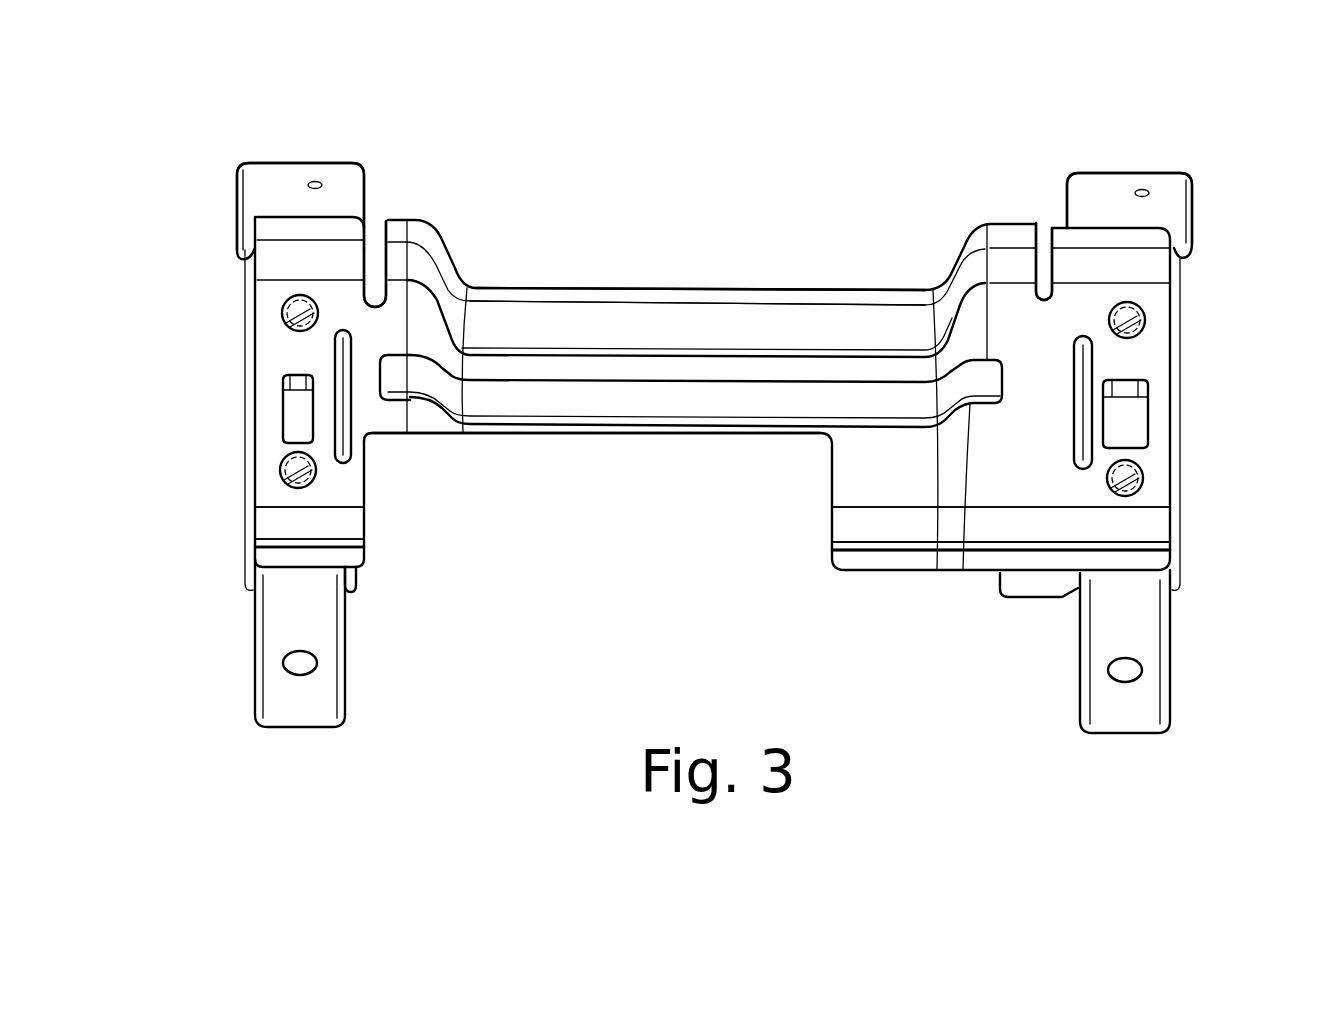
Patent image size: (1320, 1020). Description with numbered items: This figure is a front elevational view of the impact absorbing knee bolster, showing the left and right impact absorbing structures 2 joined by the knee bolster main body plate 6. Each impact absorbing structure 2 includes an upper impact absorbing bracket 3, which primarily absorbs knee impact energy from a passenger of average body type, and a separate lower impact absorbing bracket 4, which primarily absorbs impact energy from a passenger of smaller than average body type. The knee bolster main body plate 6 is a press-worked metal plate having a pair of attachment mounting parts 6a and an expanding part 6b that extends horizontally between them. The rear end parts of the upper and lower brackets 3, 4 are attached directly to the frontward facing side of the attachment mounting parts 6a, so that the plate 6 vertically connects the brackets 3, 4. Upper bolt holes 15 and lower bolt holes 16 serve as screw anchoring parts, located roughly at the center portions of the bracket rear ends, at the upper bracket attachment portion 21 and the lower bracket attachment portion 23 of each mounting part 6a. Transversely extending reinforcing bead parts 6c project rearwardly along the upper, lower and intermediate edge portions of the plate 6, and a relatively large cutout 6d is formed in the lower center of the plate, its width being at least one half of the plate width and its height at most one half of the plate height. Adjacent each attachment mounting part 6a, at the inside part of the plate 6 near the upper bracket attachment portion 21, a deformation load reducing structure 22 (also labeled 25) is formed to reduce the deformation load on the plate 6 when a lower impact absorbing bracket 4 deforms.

The impact absorbing structure 2 is at (235, 170).
The upper impact absorbing bracket 3 is at (290, 150).
The lower impact absorbing bracket 4 is at (246, 667).
The knee bolster main body plate 6 is at (729, 278).
The attachment mounting part 6a is at (280, 396).
The expanding part 6b is at (518, 287).
The reinforcing bead part 6c is at (350, 523).
The cutout 6d is at (517, 437).
The upper bolt hole 15 is at (278, 302).
The lower bolt hole 16 is at (278, 480).
The upper bracket attachment portion 21 is at (283, 345).
The deformation load reducing structure 22 is at (375, 205).
The lower bracket attachment portion 23 is at (272, 440).
The slot 25 is at (708, 264).